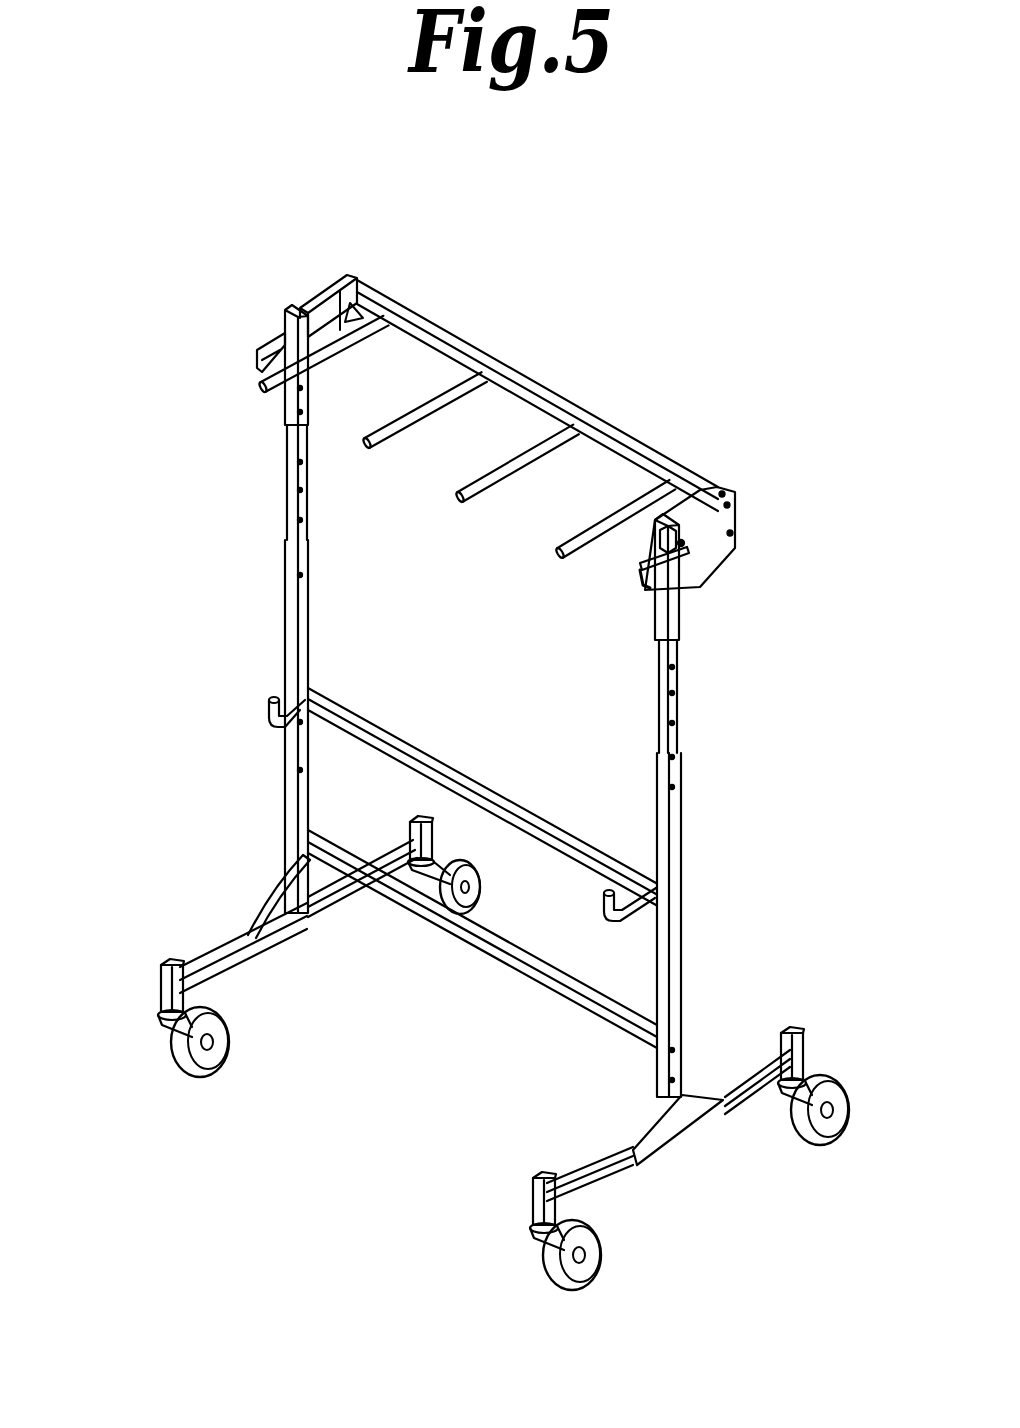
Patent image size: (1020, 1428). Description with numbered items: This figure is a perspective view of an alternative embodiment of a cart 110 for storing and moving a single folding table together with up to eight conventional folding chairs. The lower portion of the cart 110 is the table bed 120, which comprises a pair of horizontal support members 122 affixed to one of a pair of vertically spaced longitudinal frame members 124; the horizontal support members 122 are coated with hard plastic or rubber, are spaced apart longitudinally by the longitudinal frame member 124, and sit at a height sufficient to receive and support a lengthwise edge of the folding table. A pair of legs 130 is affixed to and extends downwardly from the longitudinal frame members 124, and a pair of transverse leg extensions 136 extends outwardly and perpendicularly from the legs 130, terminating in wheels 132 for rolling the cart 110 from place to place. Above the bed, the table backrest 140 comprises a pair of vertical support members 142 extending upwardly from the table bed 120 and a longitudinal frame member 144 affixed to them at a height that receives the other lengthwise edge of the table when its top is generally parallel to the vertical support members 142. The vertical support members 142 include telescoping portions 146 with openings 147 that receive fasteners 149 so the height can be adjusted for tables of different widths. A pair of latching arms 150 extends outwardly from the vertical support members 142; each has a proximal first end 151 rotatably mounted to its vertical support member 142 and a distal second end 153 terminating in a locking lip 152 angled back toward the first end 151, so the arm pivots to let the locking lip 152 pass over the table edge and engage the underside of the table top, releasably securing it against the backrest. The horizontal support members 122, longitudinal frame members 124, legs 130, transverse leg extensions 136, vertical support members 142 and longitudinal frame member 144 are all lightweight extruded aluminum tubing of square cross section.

The cart 110 is at (387, 1097).
The table bed 120 is at (727, 945).
The horizontal support members 122 is at (267, 712).
The longitudinal frame members 124 is at (587, 1013).
The legs 130 is at (287, 785).
The wheels 132 is at (173, 1067).
The transverse leg extensions 136 is at (260, 957).
The table backrest 140 is at (767, 523).
The vertical support members 142 is at (327, 370).
The longitudinal frame member 144 is at (460, 330).
The telescoping portions 146 is at (285, 480).
The openings 147 is at (678, 692).
The fasteners 149 is at (682, 788).
The latching arms 150 is at (267, 343).
The proximal first end 151 is at (680, 533).
The locking lip 152 is at (257, 360).
The distal second end 153 is at (640, 570).